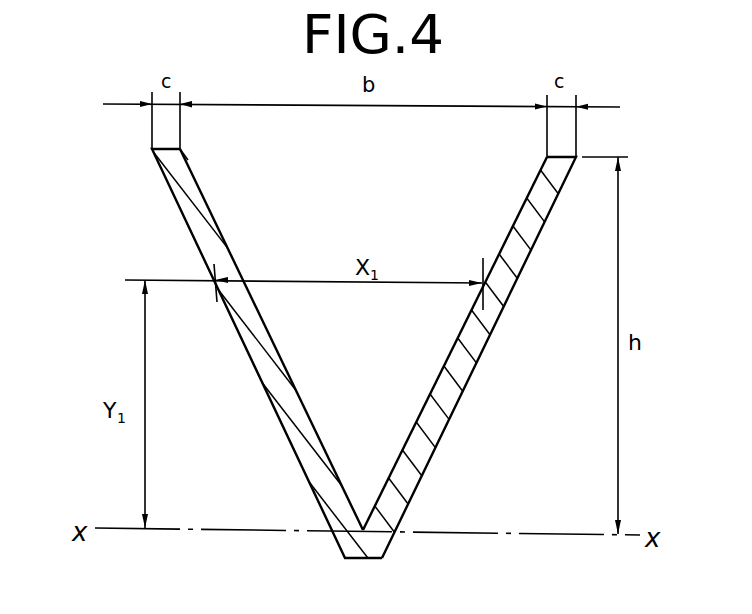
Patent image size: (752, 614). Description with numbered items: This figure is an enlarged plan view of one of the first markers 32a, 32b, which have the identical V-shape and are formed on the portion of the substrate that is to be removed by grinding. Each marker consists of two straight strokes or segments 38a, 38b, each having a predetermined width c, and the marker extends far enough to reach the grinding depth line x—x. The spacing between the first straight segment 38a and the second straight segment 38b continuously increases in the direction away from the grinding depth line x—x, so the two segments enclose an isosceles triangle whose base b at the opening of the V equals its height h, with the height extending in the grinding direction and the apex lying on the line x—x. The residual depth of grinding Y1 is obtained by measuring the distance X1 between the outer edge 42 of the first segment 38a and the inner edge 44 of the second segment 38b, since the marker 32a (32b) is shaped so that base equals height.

The outer edge 42 is at (168, 187).
The inner edge 44 is at (520, 207).
The first straight segment 38a is at (264, 362).
The second straight segment 38b is at (457, 368).
The first marker 32a is at (135, 244).
The first marker 32b is at (284, 339).